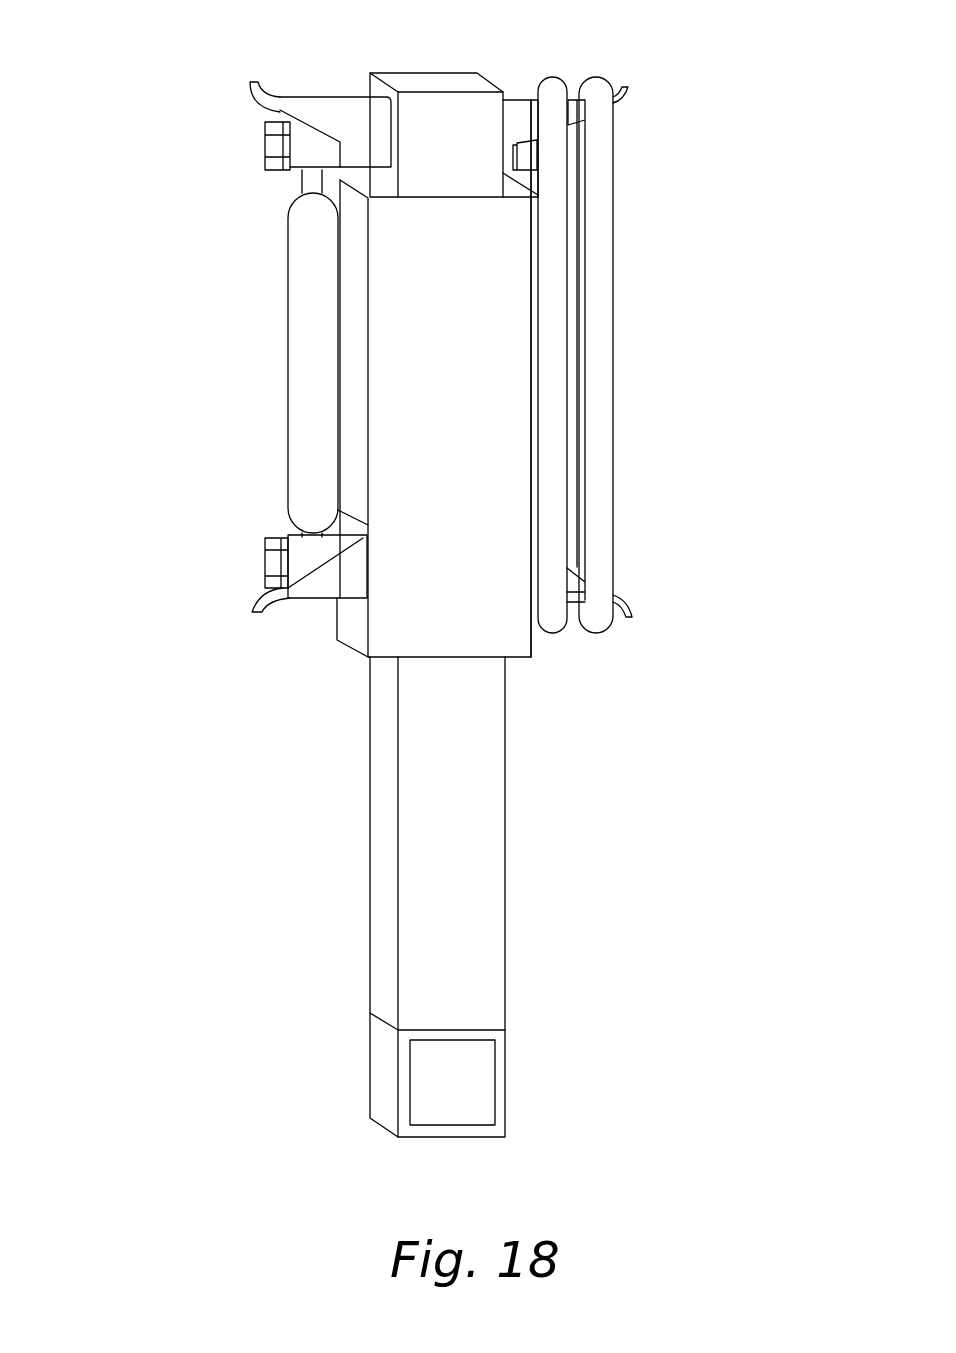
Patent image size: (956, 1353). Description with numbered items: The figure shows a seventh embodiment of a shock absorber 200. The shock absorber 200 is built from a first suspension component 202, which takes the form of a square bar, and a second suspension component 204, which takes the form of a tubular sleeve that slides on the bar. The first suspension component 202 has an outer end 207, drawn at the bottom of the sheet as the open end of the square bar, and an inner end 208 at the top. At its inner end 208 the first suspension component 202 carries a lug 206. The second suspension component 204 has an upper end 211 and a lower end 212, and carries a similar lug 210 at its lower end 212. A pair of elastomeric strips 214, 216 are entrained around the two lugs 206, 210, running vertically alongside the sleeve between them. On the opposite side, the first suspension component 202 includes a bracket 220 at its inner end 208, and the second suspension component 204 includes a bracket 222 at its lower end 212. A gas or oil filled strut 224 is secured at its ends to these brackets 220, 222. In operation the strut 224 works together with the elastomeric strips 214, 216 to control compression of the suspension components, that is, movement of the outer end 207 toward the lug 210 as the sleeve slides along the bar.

The shock absorber 200 is at (147, 267).
The first suspension component 202 is at (372, 945).
The second suspension component 204 is at (483, 550).
The lug 206 is at (617, 103).
The outer end 207 is at (505, 1075).
The inner end 208 is at (427, 103).
The lug 210 is at (635, 603).
The upper end 211 is at (505, 233).
The lower end 212 is at (510, 640).
The elastomeric strip 214 is at (553, 418).
The elastomeric strip 216 is at (600, 327).
The bracket 220 is at (307, 100).
The bracket 222 is at (315, 585).
The strut 224 is at (302, 437).